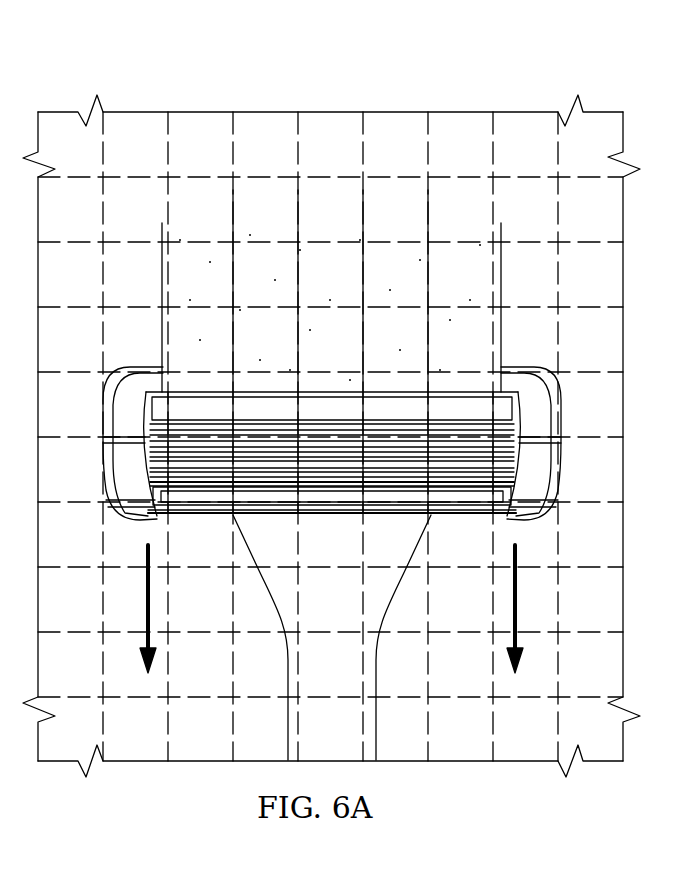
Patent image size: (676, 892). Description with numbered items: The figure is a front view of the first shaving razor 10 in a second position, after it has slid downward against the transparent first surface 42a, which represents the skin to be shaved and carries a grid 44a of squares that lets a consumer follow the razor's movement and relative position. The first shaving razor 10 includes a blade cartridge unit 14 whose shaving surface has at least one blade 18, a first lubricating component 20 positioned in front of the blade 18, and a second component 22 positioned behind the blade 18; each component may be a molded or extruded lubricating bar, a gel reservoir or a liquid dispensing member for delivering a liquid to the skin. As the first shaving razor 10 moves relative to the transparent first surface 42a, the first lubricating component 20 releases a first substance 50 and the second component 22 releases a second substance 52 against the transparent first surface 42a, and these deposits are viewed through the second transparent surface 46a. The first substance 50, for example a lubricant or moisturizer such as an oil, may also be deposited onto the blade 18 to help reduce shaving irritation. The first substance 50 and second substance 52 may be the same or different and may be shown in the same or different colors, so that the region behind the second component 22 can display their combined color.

The grid 44a is at (211, 93).
The transparent first surface 42a is at (378, 190).
The second transparent surface 46a is at (330, 340).
The second substance 52 is at (519, 288).
The first shaving razor 10 is at (335, 510).
The blade cartridge unit 14 is at (138, 522).
The first substance 50 is at (132, 455).
The second component 22 is at (505, 408).
The blade 18 is at (513, 448).
The first lubricating component 20 is at (468, 494).